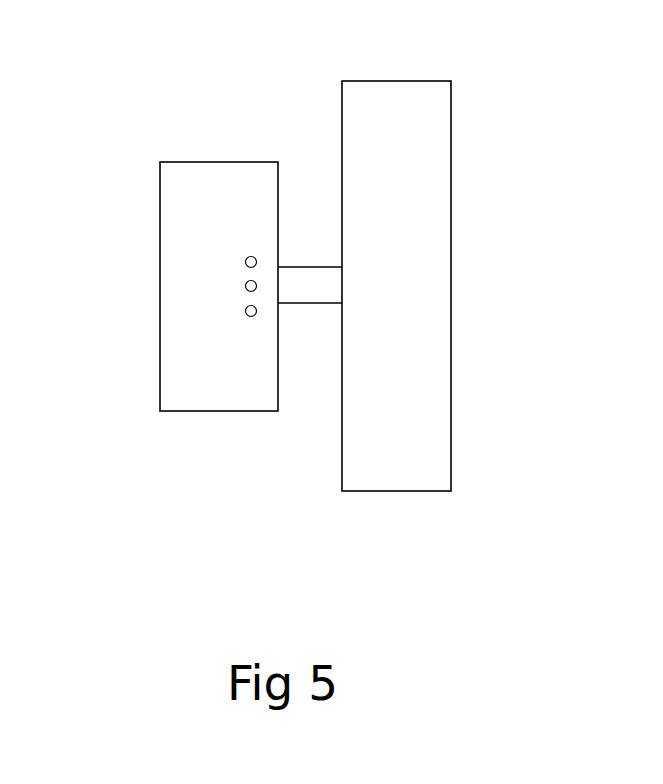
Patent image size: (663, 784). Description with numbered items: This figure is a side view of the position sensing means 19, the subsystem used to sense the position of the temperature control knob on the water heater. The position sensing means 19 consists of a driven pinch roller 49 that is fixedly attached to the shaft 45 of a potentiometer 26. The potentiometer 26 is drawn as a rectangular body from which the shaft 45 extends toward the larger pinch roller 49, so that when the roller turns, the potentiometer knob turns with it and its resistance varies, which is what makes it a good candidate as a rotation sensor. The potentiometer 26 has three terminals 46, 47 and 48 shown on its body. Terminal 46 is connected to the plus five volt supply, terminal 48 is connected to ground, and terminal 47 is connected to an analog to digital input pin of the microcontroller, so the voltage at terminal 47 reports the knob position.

The position sensing means 19 is at (315, 253).
The potentiometer 26 is at (159, 323).
The shaft 45 is at (262, 159).
The terminal 46 is at (162, 214).
The terminal 47 is at (162, 251).
The terminal 48 is at (162, 284).
The driven pinch roller 49 is at (466, 286).